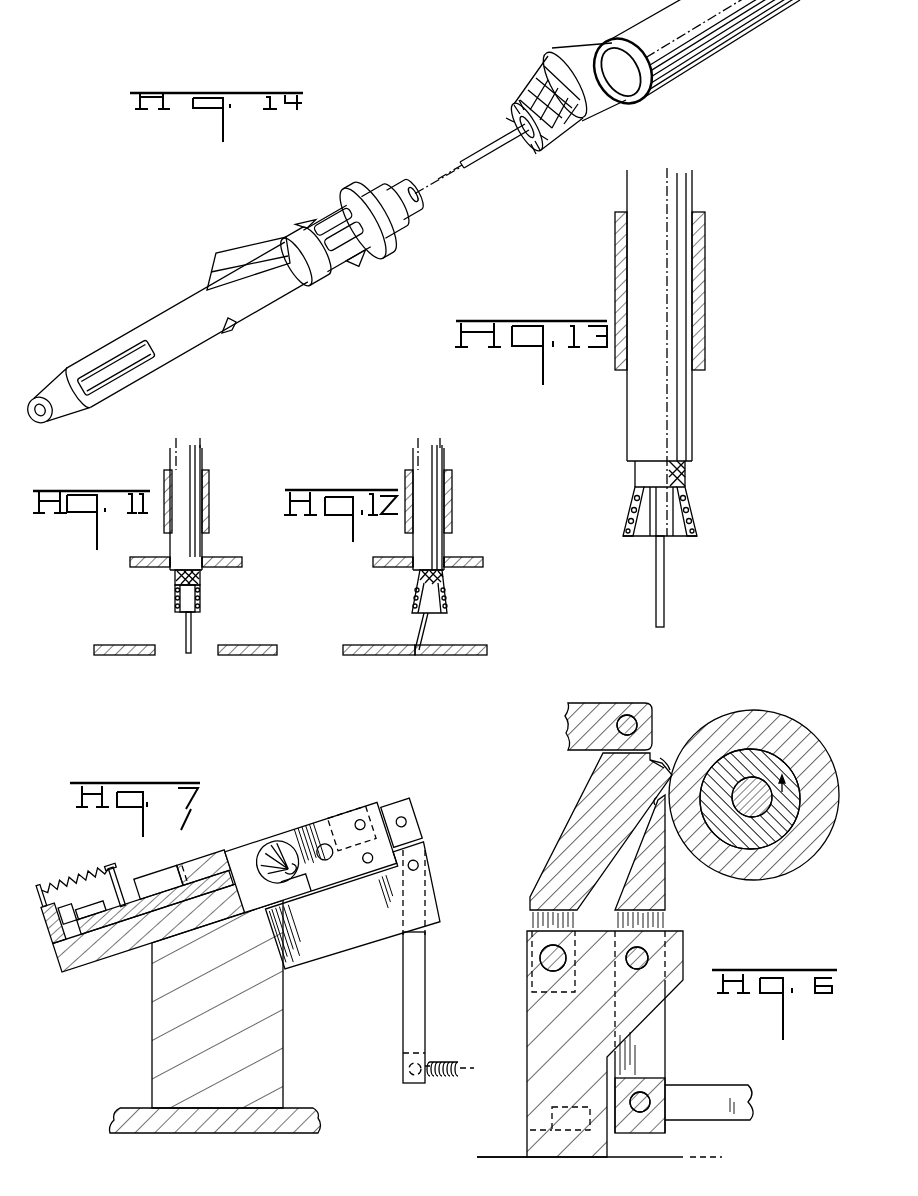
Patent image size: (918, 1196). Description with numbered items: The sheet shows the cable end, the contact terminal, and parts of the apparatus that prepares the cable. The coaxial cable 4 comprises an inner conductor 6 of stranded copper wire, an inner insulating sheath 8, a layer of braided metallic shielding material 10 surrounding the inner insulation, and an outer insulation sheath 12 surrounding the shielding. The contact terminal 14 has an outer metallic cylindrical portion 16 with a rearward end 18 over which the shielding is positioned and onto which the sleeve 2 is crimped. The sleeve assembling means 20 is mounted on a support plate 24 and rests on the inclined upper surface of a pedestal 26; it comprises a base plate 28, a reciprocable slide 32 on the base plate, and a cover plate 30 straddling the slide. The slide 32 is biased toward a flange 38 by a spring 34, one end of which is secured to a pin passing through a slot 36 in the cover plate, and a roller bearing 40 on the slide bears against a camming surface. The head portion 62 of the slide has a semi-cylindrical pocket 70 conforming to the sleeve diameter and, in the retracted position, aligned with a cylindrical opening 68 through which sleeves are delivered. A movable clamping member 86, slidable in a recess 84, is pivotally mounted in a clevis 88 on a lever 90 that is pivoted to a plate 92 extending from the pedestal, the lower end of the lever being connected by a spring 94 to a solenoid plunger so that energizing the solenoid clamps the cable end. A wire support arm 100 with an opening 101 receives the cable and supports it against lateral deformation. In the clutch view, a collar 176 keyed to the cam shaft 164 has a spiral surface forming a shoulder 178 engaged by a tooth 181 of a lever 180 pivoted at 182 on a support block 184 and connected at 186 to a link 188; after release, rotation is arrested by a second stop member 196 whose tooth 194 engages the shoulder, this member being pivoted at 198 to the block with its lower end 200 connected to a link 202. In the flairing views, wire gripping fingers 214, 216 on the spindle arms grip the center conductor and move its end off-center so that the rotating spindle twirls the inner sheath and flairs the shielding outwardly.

In FIG. 14, the sleeve 2 is at (687, 57).
In FIG. 13, the sleeve 2 is at (706, 293).
In FIG. 11, the sleeve 2 is at (209, 498).
In FIG. 12, the sleeve 2 is at (452, 500).
In FIG. 14, the coaxial cable 4 is at (624, 100).
In FIG. 13, the coaxial cable 4 is at (618, 411).
In FIG. 11, the coaxial cable 4 is at (210, 461).
In FIG. 12, the coaxial cable 4 is at (452, 461).
In FIG. 14, the inner conductor 6 is at (482, 157).
In FIG. 13, the inner conductor 6 is at (665, 589).
In FIG. 11, the inner conductor 6 is at (192, 628).
In FIG. 12, the inner conductor 6 is at (418, 630).
In FIG. 14, the inner insulating sheath 8 is at (528, 137).
In FIG. 13, the inner insulating sheath 8 is at (650, 505).
In FIG. 11, the inner insulating sheath 8 is at (178, 598).
In FIG. 12, the inner insulating sheath 8 is at (436, 613).
In FIG. 14, the shielding material 10 is at (558, 128).
In FIG. 13, the shielding material 10 is at (690, 505).
In FIG. 11, the shielding material 10 is at (199, 578).
In FIG. 12, the shielding material 10 is at (447, 598).
In FIG. 14, the outer insulation sheath 12 is at (587, 67).
In FIG. 13, the outer insulation sheath 12 is at (686, 421).
In FIG. 11, the outer insulation sheath 12 is at (197, 548).
In FIG. 12, the outer insulation sheath 12 is at (440, 548).
In FIG. 14, the contact terminal 14 is at (249, 284).
In FIG. 14, the outer metallic cylindrical portion 16 is at (165, 312).
In FIG. 14, the rearward end 18 is at (412, 207).
In FIG. 3, the sleeve assembling means 20 is at (232, 871).
In FIG. 3, the support plate 24 is at (300, 1108).
In FIG. 6, the support plate 24 is at (505, 1163).
In FIG. 3, the pedestal 26 is at (283, 1025).
In FIG. 3, the base plate 28 is at (140, 940).
In FIG. 3, the cover plate 30 is at (192, 867).
In FIG. 3, the reciprocable slide 32 is at (205, 884).
In FIG. 3, the spring 34 is at (80, 880).
In FIG. 3, the slot 36 is at (152, 880).
In FIG. 3, the flange 38 is at (50, 920).
In FIG. 3, the roller bearing 40 is at (93, 907).
In FIG. 3, the head portion 62 is at (290, 832).
In FIG. 3, the cylindrical opening 68 is at (282, 866).
In FIG. 3, the semi-cylindrical pocket 70 is at (290, 875).
In FIG. 3, the recess 84 is at (360, 815).
In FIG. 3, the movable clamping member 86 is at (383, 808).
In FIG. 3, the clevis 88 is at (421, 822).
In FIG. 3, the lever 90 is at (422, 965).
In FIG. 3, the plate 92 is at (345, 940).
In FIG. 3, the spring 94 is at (448, 1065).
In FIG. 11, the wire support arm 100 is at (243, 562).
In FIG. 12, the wire support arm 100 is at (484, 563).
In FIG. 11, the opening 101 is at (165, 566).
In FIG. 12, the opening 101 is at (410, 570).
In FIG. 6, the cam shaft 164 is at (750, 780).
In FIG. 6, the collar 176 is at (754, 799).
In FIG. 6, the shoulder 178 is at (668, 760).
In FIG. 6, the lever 180 is at (578, 820).
In FIG. 6, the tooth 181 is at (655, 777).
In FIG. 6, the pivot 182 is at (538, 955).
In FIG. 6, the support block 184 is at (538, 1037).
In FIG. 6, the pivotal connection 186 is at (629, 714).
In FIG. 6, the link 188 is at (586, 706).
In FIG. 6, the tooth 194 is at (655, 800).
In FIG. 6, the second stop member 196 is at (652, 888).
In FIG. 6, the pivot 198 is at (644, 952).
In FIG. 6, the lower end 200 is at (652, 1097).
In FIG. 6, the link 202 is at (715, 1085).
In FIG. 11, the wire gripping finger 214 is at (257, 657).
In FIG. 12, the wire gripping finger 214 is at (448, 657).
In FIG. 11, the wire gripping finger 216 is at (128, 657).
In FIG. 12, the wire gripping finger 216 is at (383, 657).